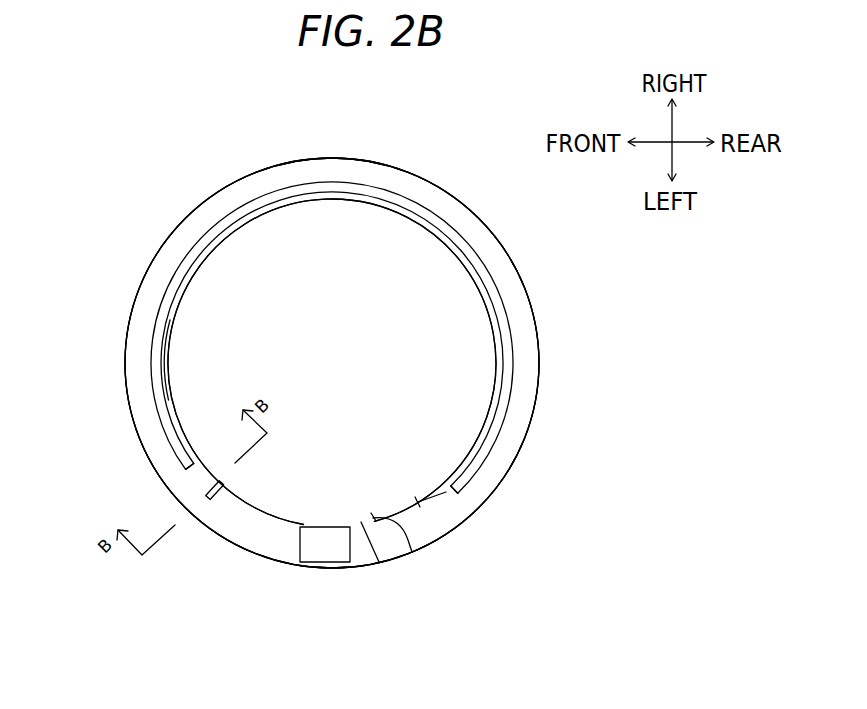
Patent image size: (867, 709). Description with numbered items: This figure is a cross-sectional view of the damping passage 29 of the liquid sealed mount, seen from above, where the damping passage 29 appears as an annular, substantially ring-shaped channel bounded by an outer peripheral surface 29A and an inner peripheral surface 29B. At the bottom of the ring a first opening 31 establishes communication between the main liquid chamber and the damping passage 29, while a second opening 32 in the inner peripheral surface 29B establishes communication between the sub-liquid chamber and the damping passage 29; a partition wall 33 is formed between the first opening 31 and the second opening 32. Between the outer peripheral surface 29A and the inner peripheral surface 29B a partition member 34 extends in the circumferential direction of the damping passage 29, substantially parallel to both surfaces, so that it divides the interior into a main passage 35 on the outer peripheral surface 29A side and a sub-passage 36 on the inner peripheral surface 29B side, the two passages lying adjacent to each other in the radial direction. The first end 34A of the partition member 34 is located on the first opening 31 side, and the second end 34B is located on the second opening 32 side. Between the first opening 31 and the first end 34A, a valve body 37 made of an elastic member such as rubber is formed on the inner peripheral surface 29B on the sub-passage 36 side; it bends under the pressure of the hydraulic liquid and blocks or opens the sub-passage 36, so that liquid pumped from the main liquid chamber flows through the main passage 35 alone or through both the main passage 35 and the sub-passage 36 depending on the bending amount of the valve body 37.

The damping passage 29 is at (318, 119).
The outer peripheral surface 29A is at (528, 295).
The inner peripheral surface 29B is at (488, 321).
The partition member 34 is at (441, 220).
The first end of partition member 34A is at (203, 473).
The second end of partition member 34B is at (424, 496).
The main passage 35 is at (126, 392).
The sub-passage 36 is at (177, 393).
The valve body 37 is at (220, 494).
The first opening 31 is at (301, 564).
The second opening 32 is at (410, 546).
The partition wall 33 is at (379, 562).